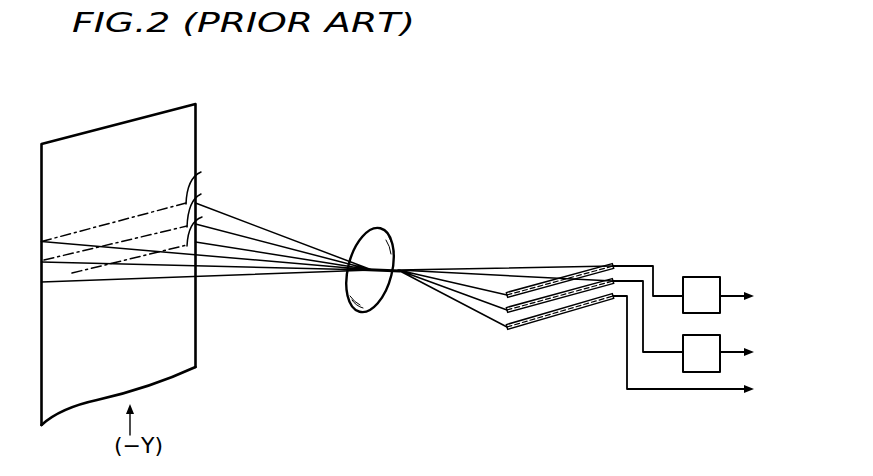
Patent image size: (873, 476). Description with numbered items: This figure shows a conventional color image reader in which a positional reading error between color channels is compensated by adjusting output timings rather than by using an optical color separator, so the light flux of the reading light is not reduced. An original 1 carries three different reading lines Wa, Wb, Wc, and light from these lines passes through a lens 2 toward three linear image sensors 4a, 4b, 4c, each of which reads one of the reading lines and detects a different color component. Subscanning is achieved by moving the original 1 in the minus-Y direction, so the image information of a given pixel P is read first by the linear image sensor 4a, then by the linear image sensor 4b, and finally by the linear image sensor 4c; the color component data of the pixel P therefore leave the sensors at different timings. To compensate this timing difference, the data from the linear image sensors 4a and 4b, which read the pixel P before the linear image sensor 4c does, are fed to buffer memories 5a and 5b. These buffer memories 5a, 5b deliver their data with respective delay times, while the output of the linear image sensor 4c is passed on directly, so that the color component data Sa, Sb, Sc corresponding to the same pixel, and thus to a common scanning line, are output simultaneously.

The original 1 is at (196, 114).
The lens 2 is at (385, 233).
The linear image sensor 4a is at (458, 296).
The linear image sensor 4b is at (478, 315).
The linear image sensor 4c is at (507, 327).
The buffer memory 5a is at (697, 277).
The buffer memory 5b is at (685, 335).
The reading line Wa is at (202, 217).
The reading line Wb is at (201, 194).
The reading line Wc is at (201, 172).
The pixel P is at (124, 302).
The color component data Sa is at (742, 284).
The color component data Sb is at (742, 340).
The color component data Sc is at (688, 344).